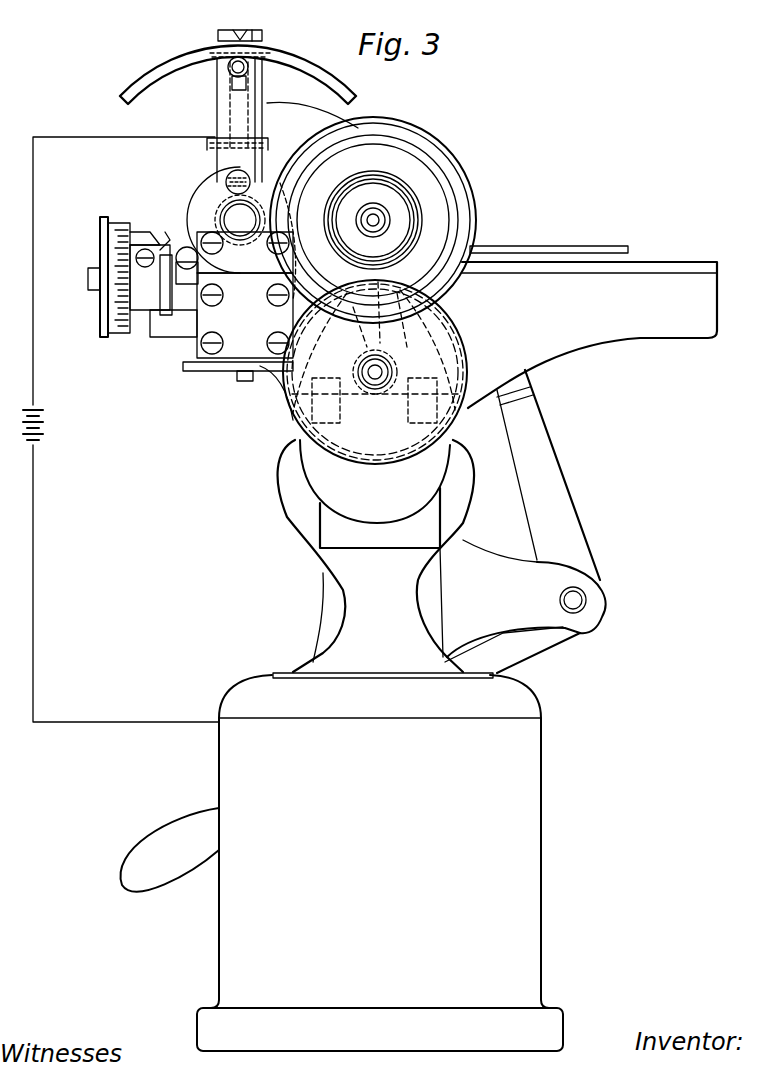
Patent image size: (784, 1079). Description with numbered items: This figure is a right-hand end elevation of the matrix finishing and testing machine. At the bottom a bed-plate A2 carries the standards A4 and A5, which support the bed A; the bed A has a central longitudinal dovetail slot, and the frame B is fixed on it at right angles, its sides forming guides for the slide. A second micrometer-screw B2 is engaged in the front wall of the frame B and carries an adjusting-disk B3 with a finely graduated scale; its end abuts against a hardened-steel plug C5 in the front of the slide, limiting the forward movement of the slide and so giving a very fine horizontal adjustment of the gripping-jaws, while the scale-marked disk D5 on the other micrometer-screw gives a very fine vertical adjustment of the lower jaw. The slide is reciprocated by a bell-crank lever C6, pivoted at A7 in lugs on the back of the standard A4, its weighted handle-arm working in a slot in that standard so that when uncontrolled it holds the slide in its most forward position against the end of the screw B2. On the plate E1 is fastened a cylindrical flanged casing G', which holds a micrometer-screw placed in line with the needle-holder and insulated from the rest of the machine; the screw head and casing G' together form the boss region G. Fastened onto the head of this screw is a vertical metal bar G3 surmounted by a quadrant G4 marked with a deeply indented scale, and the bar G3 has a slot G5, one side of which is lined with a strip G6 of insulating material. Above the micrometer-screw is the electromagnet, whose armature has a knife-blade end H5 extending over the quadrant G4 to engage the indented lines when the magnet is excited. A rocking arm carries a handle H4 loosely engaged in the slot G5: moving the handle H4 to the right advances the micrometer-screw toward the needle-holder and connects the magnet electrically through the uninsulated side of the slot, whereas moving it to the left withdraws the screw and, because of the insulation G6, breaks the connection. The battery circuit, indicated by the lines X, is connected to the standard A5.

The lines X is at (34, 601).
The handle H4 is at (232, 58).
The knife-blade end H5 is at (255, 42).
The slot G5 is at (244, 85).
The strip of insulating material G6 is at (226, 79).
The quadrant G4 is at (330, 80).
The vertical metal arm or bar G3 is at (237, 112).
The housing G is at (208, 220).
The cylindrical flanged casing G' is at (211, 220).
The frame B is at (137, 295).
The adjusting-disk B3 is at (110, 240).
The second micrometer-screw B2 is at (173, 258).
The plate E1 is at (250, 332).
The hardened-steel plug C5 is at (173, 313).
The disk D5 is at (192, 374).
The bed A is at (313, 465).
The standard A4 is at (327, 592).
The bell-crank lever C6 is at (528, 421).
The pivot A7 is at (587, 601).
The standard A5 is at (237, 740).
The bed-plate A2 is at (430, 1013).